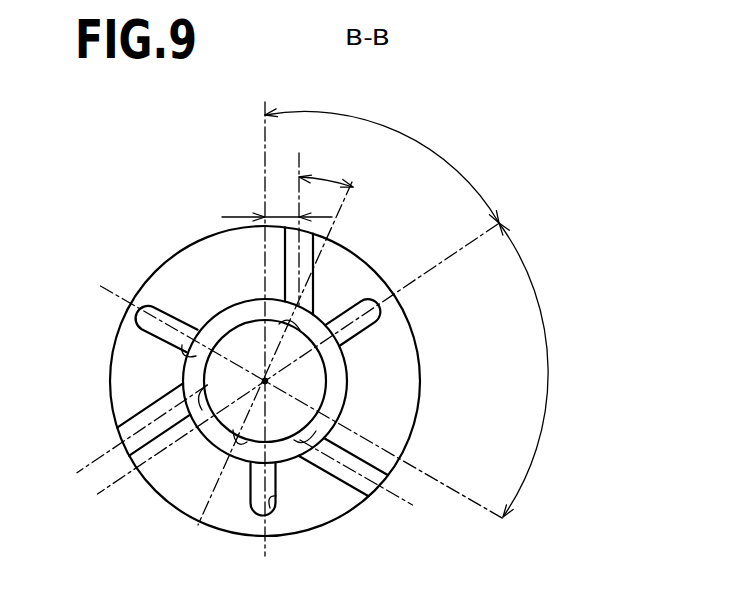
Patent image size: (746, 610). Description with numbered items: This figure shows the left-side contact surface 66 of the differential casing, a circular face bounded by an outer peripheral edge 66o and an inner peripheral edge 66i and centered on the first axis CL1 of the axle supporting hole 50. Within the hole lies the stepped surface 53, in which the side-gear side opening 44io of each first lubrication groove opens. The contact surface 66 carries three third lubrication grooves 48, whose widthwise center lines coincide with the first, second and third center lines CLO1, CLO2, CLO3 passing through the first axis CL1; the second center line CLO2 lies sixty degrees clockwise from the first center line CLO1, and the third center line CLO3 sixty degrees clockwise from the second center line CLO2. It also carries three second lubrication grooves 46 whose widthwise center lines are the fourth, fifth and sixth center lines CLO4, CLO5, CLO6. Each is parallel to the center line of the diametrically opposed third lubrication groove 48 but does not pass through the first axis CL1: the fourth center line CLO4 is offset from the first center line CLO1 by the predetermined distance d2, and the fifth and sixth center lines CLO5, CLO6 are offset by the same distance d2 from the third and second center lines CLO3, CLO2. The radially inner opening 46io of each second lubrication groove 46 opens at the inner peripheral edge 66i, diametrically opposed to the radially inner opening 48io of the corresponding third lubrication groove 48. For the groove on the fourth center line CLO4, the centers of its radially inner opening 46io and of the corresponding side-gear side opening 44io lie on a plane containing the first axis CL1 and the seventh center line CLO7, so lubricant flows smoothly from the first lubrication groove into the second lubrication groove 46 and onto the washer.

The stepped surface 53 is at (208, 325).
The contact surface 66 is at (298, 376).
The outer peripheral edge 66o is at (357, 260).
The inner peripheral edge 66i is at (348, 352).
The third lubrication groove 48 is at (276, 508).
The radially inner opening of third lubrication groove 48io is at (182, 360).
The second lubrication groove 46 is at (339, 476).
The radially inner opening of second lubrication groove 46io is at (176, 391).
The side-gear side opening of first lubrication groove 44io is at (205, 414).
The axle supporting hole 50 is at (238, 432).
The first center line CLO1 is at (266, 317).
The second center line CLO2 is at (500, 222).
The third center line CLO3 is at (270, 398).
The fourth center line CLO4 is at (309, 216).
The fifth center line CLO5 is at (400, 497).
The sixth center line CLO6 is at (113, 445).
The seventh center line CLO7 is at (305, 342).
The first axis CL1 is at (268, 383).
The predetermined distance d2 is at (258, 215).